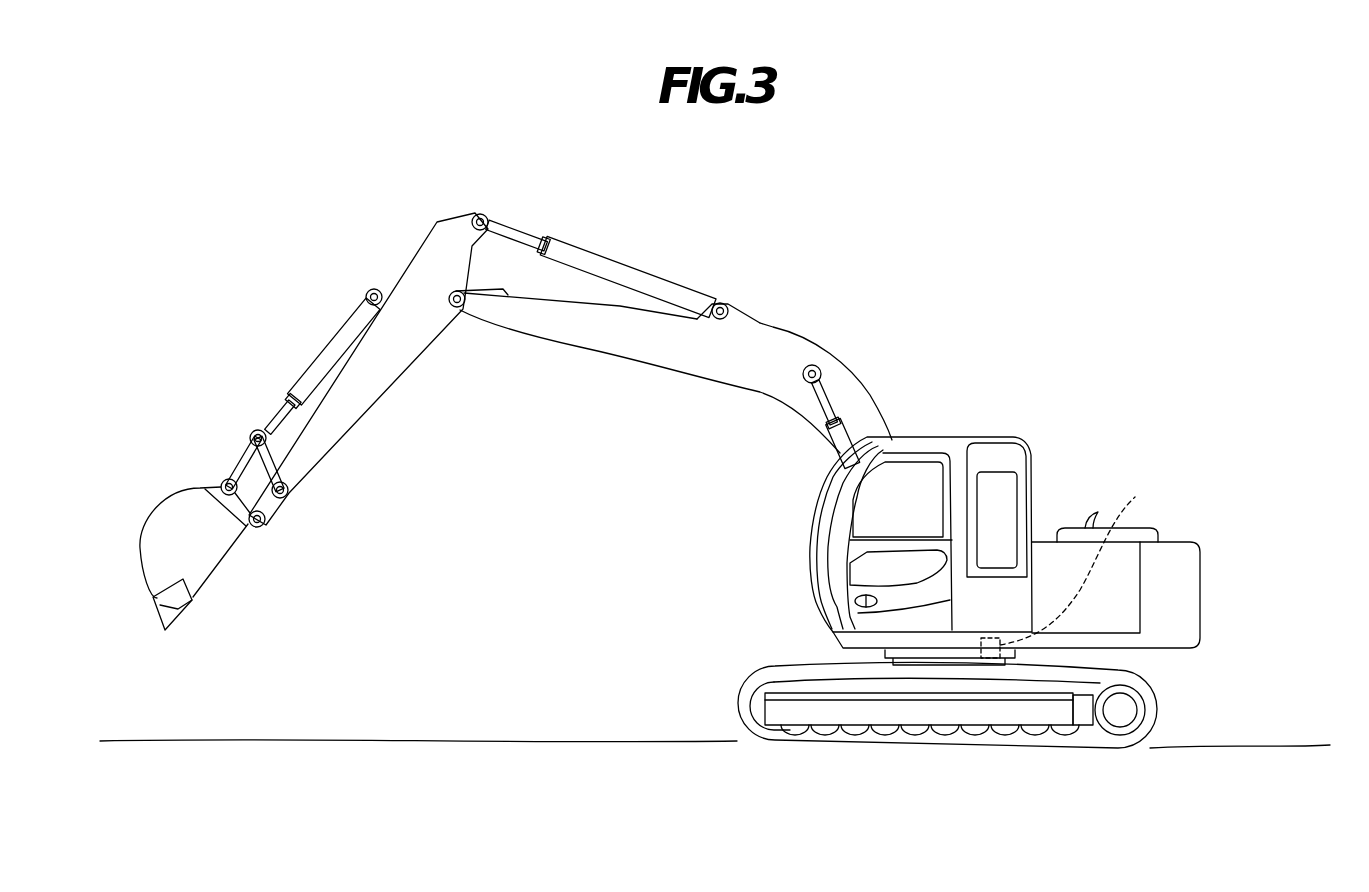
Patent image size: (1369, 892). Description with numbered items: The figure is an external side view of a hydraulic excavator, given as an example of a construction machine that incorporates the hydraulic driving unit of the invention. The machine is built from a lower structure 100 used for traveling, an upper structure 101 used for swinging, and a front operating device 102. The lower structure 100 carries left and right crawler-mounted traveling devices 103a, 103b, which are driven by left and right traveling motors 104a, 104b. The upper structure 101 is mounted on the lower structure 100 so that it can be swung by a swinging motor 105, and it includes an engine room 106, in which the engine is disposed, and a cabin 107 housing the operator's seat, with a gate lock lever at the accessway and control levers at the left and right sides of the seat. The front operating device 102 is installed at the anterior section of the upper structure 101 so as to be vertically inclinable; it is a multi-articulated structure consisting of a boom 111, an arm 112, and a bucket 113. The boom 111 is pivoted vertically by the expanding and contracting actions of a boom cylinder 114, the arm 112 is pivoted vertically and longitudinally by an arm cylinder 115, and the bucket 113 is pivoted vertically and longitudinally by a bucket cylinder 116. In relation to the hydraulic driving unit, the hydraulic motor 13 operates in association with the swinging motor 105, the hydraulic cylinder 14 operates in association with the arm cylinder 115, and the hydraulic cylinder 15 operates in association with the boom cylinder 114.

The lower structure 100 is at (944, 731).
The upper structure 101 is at (1048, 521).
The front operating device 102 is at (818, 311).
The crawler-mounted traveling device 103a is at (745, 683).
The crawler-mounted traveling device 103b is at (851, 701).
The traveling motor 104a is at (1127, 703).
The traveling motor 104b is at (1219, 710).
The swinging motor 105 is at (1237, 568).
The hydraulic motor 13 is at (1118, 570).
The engine room 106 is at (1120, 602).
The cabin 107 is at (942, 437).
The boom 111 is at (596, 338).
The arm 112 is at (357, 407).
The bucket 113 is at (212, 566).
The boom cylinder 114 is at (840, 455).
The hydraulic cylinder 15 is at (766, 428).
The arm cylinder 115 is at (632, 268).
The hydraulic cylinder 14 is at (601, 261).
The bucket cylinder 116 is at (313, 355).